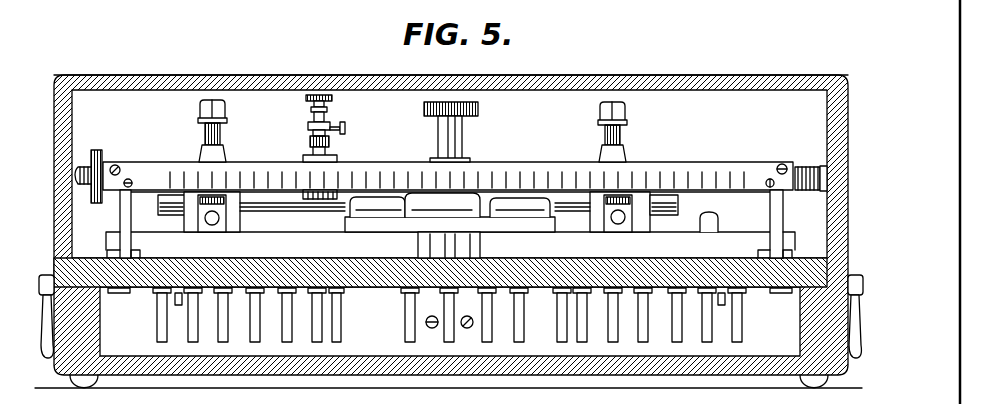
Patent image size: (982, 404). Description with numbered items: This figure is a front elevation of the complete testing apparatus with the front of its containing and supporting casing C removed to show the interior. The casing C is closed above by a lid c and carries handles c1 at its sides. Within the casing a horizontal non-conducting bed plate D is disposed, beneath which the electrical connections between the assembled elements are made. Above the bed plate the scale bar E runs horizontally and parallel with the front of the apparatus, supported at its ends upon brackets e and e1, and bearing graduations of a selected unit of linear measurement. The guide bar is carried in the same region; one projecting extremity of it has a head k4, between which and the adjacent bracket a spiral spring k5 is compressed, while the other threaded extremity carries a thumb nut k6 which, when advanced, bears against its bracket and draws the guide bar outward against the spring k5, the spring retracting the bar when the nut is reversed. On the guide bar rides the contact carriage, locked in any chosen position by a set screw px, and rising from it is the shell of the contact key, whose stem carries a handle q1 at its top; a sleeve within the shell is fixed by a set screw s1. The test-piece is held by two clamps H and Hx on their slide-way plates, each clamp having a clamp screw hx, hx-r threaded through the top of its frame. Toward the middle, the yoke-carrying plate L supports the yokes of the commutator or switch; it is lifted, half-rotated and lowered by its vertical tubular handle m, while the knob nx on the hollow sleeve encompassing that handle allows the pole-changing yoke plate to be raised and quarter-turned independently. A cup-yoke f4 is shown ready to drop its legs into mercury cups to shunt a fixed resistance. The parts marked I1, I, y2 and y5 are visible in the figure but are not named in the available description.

The containing and supporting casing C is at (451, 207).
The lid c is at (522, 72).
The handles c1 is at (44, 360).
The non-conducting bed plate D is at (133, 294).
The scale bar E is at (392, 160).
The thumb nut k6 is at (97, 149).
The spiral spring k5 is at (800, 165).
The head k4 is at (822, 165).
The clamp screw hx is at (198, 112).
The clamp screw hx-r is at (627, 112).
The handle q1 is at (305, 100).
The set screw px is at (307, 136).
The set screw s1 is at (346, 128).
The tubular handle m is at (438, 135).
The annular enlargement nx is at (470, 160).
The bracket e is at (120, 215).
The bracket e1 is at (783, 215).
The left guide piece I1 is at (168, 200).
The right guide piece I is at (670, 210).
The clamp Hx is at (212, 228).
The clamp H is at (600, 225).
The yoke-carrying plate L is at (450, 236).
The left arch piece y2 is at (378, 212).
The right arch piece y5 is at (520, 212).
The cup-yoke f4 is at (716, 214).